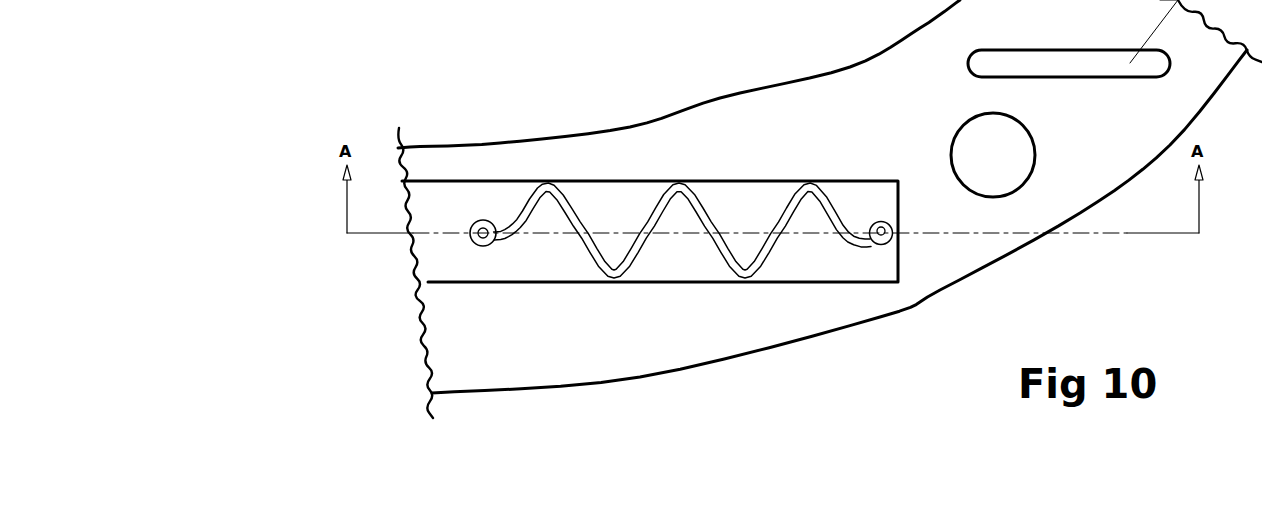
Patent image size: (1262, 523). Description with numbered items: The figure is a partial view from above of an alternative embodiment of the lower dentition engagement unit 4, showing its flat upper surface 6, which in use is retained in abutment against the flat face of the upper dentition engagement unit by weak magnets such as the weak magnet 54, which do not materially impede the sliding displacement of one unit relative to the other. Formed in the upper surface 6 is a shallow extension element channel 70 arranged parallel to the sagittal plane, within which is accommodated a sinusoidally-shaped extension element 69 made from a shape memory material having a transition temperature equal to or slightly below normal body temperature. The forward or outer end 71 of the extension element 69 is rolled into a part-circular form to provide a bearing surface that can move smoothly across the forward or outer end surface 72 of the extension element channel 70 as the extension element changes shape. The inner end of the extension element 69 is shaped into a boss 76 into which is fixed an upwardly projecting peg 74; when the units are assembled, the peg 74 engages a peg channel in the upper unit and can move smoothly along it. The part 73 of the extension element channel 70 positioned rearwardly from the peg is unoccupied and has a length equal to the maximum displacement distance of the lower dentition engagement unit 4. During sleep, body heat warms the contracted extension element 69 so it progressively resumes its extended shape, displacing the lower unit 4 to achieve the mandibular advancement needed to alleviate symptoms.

The lower dentition engagement unit 4 is at (782, 150).
The upper surface 6 is at (870, 115).
The weak magnet 54 is at (997, 167).
The extension element 69 is at (585, 246).
The extension element channel 70 is at (675, 250).
The forward or outer end 71 is at (893, 244).
The forward or outer end surface 72 is at (898, 205).
The unoccupied part of extension element channel 73 is at (440, 250).
The peg 74 is at (482, 220).
The boss 76 is at (480, 222).